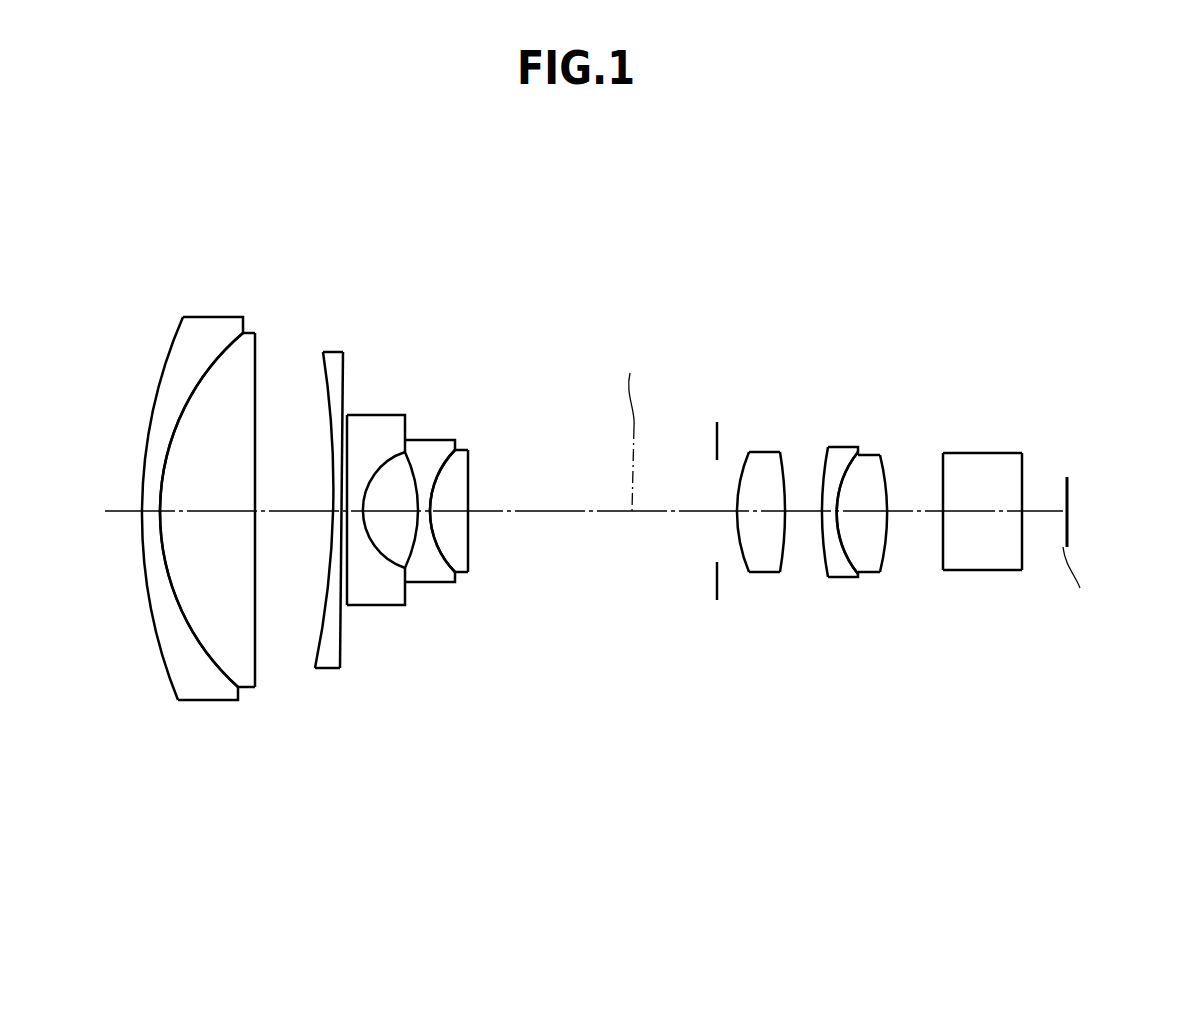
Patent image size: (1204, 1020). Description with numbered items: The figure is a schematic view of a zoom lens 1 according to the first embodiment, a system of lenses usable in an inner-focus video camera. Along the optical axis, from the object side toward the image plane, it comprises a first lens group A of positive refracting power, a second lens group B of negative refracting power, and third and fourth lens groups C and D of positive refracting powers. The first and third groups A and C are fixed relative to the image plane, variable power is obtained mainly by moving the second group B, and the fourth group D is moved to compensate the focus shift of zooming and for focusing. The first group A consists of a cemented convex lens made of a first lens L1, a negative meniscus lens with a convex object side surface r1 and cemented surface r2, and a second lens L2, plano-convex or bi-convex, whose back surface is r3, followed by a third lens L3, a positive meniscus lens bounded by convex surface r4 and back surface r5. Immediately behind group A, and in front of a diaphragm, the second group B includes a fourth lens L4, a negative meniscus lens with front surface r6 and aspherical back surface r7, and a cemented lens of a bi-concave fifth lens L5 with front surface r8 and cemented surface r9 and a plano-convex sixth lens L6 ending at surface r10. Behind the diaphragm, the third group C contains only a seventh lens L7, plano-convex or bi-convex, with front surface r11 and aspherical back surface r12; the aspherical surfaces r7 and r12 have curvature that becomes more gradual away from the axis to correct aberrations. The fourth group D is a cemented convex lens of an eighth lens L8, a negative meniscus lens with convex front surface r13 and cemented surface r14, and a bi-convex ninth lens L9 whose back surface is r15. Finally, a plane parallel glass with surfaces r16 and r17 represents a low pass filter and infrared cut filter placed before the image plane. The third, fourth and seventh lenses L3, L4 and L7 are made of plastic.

The zoom lens 1 is at (648, 673).
The first lens group A is at (355, 237).
The second lens group B is at (497, 354).
The third lens group C is at (787, 385).
The fourth lens group D is at (893, 385).
The first lens L1 is at (190, 343).
The second lens L2 is at (245, 352).
The third lens L3 is at (330, 365).
The fourth lens L4 is at (375, 433).
The fifth lens L5 is at (433, 452).
The sixth lens L6 is at (462, 477).
The seventh lens L7 is at (763, 465).
The eighth lens L8 is at (843, 465).
The ninth lens L9 is at (865, 462).
The first surface r1 is at (173, 693).
The second surface r2 is at (223, 673).
The third surface r3 is at (253, 676).
The fourth surface r4 is at (303, 653).
The fifth surface r5 is at (347, 663).
The sixth surface r6 is at (350, 601).
The seventh surface r7 is at (387, 580).
The eighth surface r8 is at (408, 583).
The ninth surface r9 is at (437, 583).
The tenth surface r10 is at (472, 571).
The eleventh surface r11 is at (745, 573).
The twelfth surface r12 is at (790, 568).
The thirteenth surface r13 is at (825, 578).
The fourteenth surface r14 is at (850, 578).
The fifteenth surface r15 is at (880, 573).
The sixteenth surface r16 is at (943, 571).
The seventeenth surface r17 is at (1022, 558).